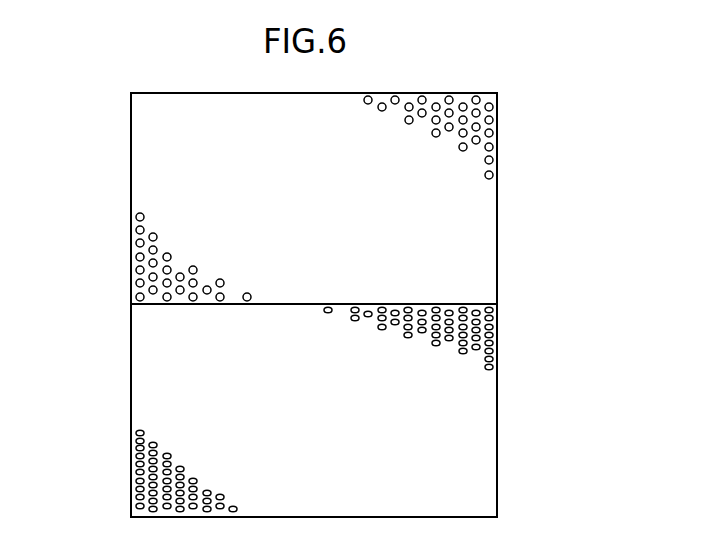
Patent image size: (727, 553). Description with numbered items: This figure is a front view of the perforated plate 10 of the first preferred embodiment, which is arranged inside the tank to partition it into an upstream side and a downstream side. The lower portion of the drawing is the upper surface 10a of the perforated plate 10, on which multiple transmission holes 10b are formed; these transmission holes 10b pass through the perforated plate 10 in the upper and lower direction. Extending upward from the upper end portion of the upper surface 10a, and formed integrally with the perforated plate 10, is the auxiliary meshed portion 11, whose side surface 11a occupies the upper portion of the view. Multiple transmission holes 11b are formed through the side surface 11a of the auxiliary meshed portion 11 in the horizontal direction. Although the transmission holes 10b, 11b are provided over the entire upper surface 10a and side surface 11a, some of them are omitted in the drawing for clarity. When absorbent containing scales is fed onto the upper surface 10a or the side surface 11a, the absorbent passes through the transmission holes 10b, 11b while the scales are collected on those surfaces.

The perforated plate 10 is at (131, 336).
The upper surface 10a is at (327, 422).
The transmission holes 10b is at (140, 472).
The auxiliary meshed portion 11 is at (131, 137).
The side surface 11a is at (327, 212).
The transmission holes 11b is at (153, 237).